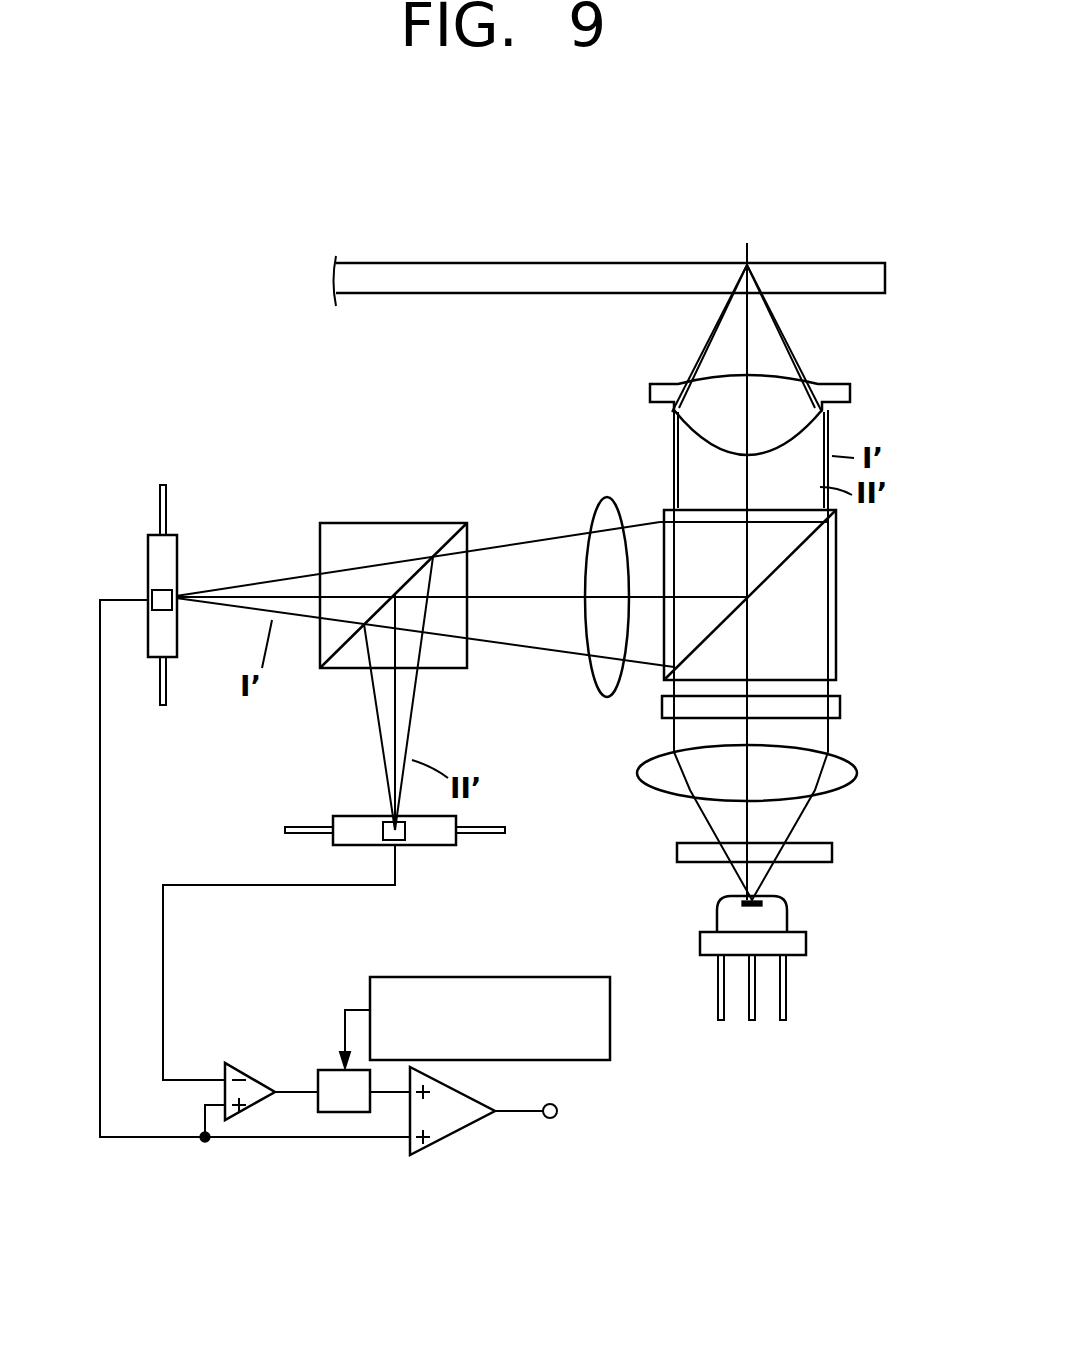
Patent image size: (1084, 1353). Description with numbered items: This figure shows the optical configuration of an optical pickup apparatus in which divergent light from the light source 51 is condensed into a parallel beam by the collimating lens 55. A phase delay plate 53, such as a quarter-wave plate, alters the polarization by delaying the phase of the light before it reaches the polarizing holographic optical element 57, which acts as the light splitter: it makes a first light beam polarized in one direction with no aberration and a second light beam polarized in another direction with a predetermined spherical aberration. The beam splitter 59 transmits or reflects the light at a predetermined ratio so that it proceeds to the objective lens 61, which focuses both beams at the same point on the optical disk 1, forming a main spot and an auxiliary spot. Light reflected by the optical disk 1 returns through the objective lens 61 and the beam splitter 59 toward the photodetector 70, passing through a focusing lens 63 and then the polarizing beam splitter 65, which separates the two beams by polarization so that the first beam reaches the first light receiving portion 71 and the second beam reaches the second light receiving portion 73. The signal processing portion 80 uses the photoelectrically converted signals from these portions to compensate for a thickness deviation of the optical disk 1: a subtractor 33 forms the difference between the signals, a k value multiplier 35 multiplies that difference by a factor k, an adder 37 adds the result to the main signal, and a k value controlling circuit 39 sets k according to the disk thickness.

The optical disk 1 is at (866, 264).
The light source 51 is at (787, 912).
The phase delay plate 53 is at (832, 852).
The collimating lens 55 is at (857, 772).
The polarizing holographic optical element 57 is at (840, 706).
The beam splitter 59 is at (836, 641).
The objective lens 61 is at (850, 394).
The focusing lens 63 is at (604, 698).
The polarizing beam splitter 65 is at (448, 668).
The photodetector 70 is at (111, 551).
The first light receiving portion 71 is at (148, 548).
The second light receiving portion 73 is at (340, 818).
The signal processing portion 80 is at (375, 937).
The subtractor 33 is at (262, 1080).
The k value multiplier 35 is at (316, 1108).
The adder 37 is at (458, 1145).
The k value controlling circuit 39 is at (610, 1032).